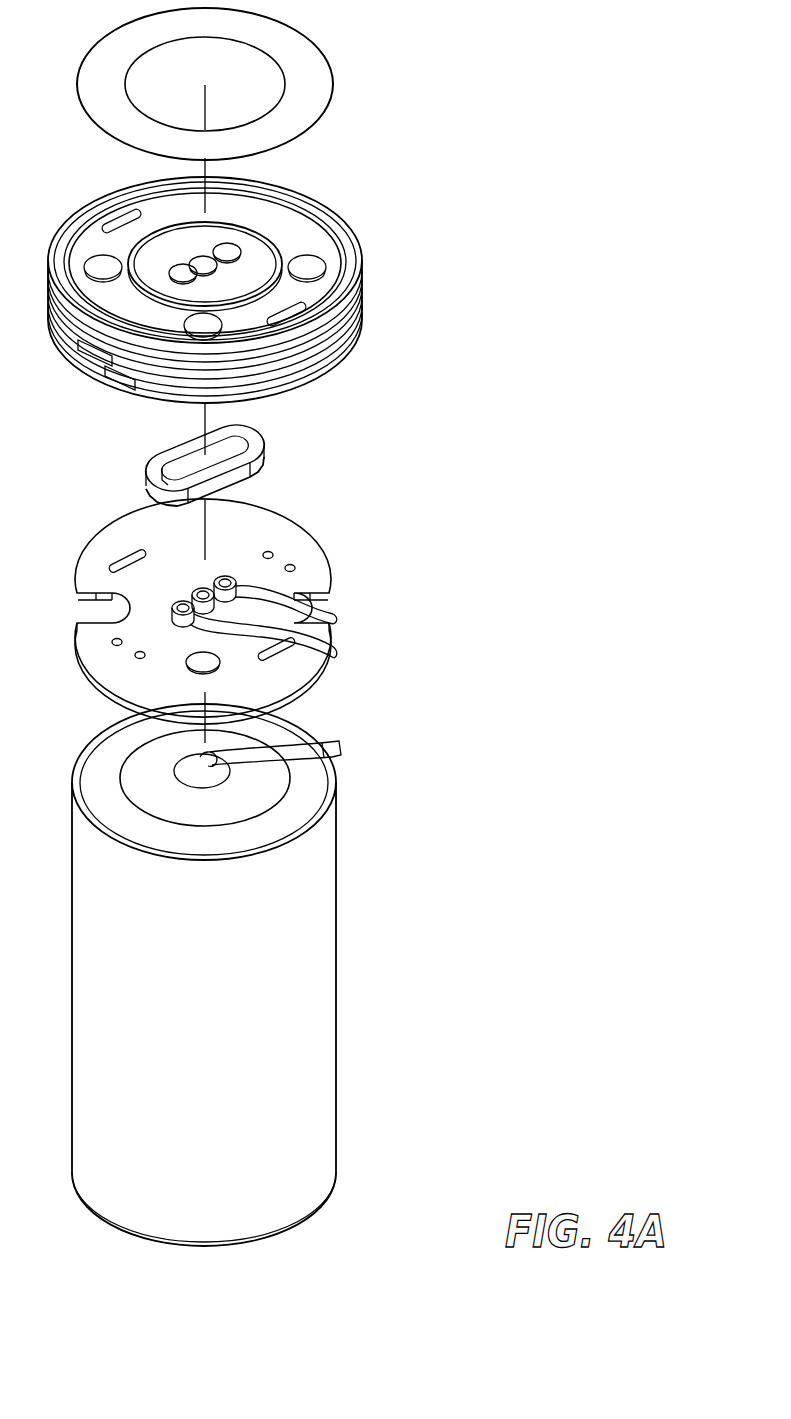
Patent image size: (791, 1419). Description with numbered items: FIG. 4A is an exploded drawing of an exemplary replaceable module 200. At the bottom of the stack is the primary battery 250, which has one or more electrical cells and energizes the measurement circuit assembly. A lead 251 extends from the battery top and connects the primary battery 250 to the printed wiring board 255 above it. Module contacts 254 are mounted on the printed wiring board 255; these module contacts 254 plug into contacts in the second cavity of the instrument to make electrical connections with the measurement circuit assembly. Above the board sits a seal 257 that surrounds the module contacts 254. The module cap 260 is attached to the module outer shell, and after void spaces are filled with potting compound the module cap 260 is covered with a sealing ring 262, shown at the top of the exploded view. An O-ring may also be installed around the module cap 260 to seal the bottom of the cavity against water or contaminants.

The replaceable module 200 is at (462, 228).
The sealing ring 262 is at (331, 64).
The module cap 260 is at (363, 287).
The seal 257 is at (268, 456).
The printed wiring board 255 is at (313, 556).
The module contacts 254 is at (306, 630).
The leads 251 is at (326, 741).
The primary battery 250 is at (336, 990).